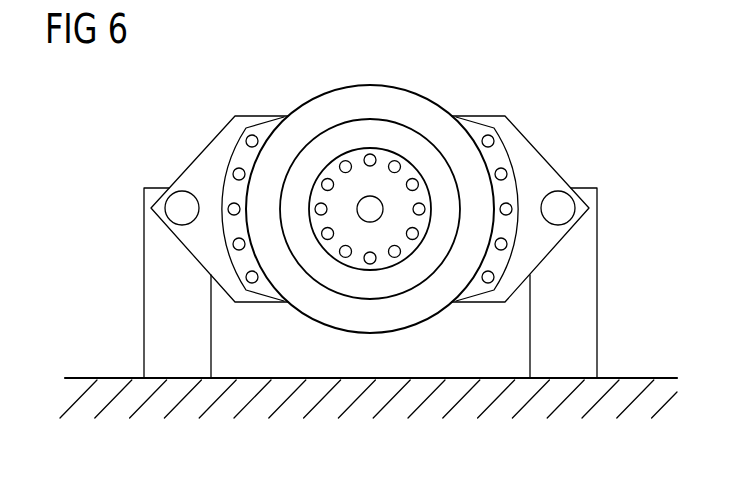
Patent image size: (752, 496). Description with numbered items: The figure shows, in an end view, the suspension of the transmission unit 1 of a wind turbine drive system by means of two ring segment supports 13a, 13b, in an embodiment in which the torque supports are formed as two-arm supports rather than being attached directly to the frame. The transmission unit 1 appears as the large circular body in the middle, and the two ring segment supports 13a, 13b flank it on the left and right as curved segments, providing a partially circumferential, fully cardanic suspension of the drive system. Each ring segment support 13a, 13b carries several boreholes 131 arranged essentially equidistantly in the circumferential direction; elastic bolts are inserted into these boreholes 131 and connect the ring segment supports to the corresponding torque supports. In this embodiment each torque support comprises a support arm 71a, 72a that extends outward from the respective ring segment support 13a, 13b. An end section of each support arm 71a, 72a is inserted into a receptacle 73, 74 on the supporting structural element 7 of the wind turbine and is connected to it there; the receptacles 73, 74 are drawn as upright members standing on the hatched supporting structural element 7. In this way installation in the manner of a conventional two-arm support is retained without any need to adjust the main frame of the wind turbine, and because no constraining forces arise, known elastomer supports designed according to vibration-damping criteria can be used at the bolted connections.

The transmission unit 1 is at (378, 100).
The ring segment support 13a is at (273, 118).
The ring segment support 13b is at (465, 118).
The boreholes 131 is at (236, 242).
The support arm 71a is at (193, 158).
The support arm 72a is at (547, 158).
The receptacle 73 is at (143, 317).
The receptacle 74 is at (597, 317).
The supporting structural element 7 is at (432, 407).